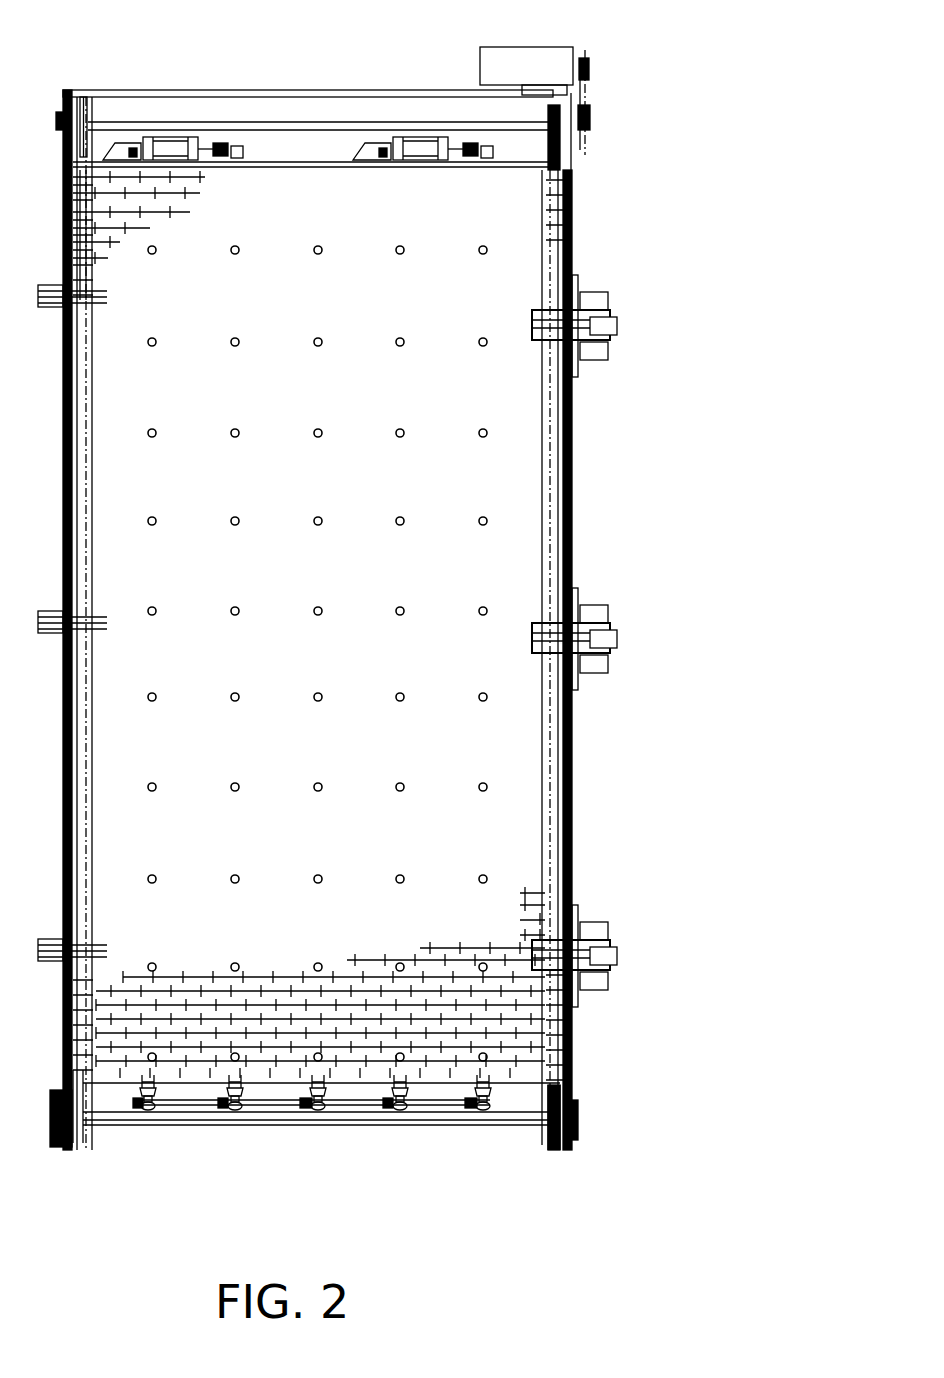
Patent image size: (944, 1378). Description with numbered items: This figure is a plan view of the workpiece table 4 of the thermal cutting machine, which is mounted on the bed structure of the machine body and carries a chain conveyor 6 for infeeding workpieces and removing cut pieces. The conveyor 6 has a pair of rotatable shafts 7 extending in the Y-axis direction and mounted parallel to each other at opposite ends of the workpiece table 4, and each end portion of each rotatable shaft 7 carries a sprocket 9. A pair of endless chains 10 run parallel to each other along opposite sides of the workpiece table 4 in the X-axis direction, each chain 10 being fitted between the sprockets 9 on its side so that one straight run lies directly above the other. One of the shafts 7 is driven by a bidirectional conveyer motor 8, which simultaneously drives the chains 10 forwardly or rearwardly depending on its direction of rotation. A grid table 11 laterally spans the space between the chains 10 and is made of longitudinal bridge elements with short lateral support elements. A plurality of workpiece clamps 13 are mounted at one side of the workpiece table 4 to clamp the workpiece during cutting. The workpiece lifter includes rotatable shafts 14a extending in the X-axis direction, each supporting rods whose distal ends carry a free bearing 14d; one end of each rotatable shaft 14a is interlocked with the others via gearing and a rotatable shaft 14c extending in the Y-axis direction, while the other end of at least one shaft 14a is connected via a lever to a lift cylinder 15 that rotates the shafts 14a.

The workpiece table 4 is at (30, 548).
The conveyor 6 is at (70, 1140).
The rotatable shaft 7 is at (340, 130).
The conveyer motor 8 is at (510, 54).
The sprocket 9 is at (88, 102).
The endless chain 10 is at (69, 730).
The grid table 11 is at (108, 232).
The workpiece clamp 13 is at (602, 358).
The rotatable shaft 14a is at (149, 1070).
The rotatable shaft 14c is at (345, 1105).
The free bearing 14d is at (151, 962).
The lift cylinder 15 is at (168, 140).